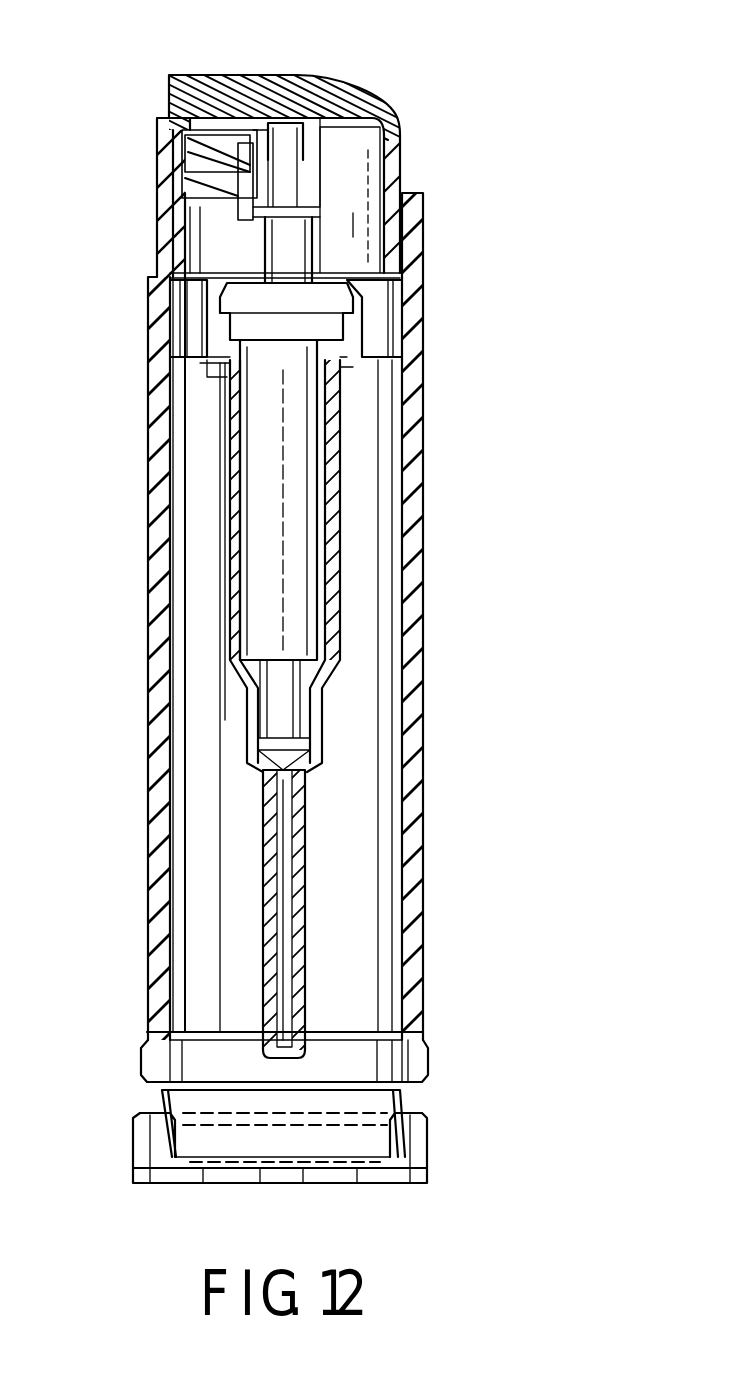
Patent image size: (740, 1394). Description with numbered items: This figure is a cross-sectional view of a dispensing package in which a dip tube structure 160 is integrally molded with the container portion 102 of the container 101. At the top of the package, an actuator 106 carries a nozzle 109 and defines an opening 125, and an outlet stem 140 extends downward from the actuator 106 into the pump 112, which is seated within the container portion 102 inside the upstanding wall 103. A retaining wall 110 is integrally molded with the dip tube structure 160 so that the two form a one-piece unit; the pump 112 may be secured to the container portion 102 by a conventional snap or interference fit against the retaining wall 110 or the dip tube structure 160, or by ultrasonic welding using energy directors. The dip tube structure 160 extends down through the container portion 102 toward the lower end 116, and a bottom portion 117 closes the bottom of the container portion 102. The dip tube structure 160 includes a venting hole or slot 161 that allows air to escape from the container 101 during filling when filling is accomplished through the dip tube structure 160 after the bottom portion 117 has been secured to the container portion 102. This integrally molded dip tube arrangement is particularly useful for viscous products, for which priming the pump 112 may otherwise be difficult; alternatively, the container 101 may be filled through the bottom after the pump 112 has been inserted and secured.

The container 101 is at (483, 407).
The container portion 102 is at (424, 522).
The upstanding wall 103 is at (424, 277).
The actuator 106 is at (381, 95).
The nozzle 109 is at (199, 123).
The retaining wall 110 is at (356, 362).
The pump 112 is at (270, 470).
The lower end 116 is at (428, 1012).
The bottom portion 117 is at (429, 1157).
The opening 125 is at (166, 155).
The outlet stem 140 is at (317, 236).
The dip tube structure 160 is at (242, 750).
The venting hole or slot 161 is at (218, 382).